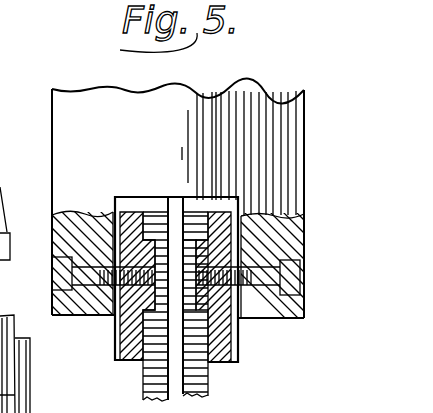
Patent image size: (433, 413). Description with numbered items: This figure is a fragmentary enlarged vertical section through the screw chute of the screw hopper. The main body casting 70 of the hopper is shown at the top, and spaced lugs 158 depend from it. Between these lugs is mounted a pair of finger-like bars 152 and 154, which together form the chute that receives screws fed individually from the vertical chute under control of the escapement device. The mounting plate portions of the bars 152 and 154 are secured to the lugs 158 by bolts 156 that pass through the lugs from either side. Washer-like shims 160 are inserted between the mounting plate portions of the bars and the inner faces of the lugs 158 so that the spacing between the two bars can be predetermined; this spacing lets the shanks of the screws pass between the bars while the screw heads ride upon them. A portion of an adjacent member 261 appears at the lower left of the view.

The main body casting 70 is at (293, 103).
The finger-like bar 152 is at (153, 368).
The finger-like bar 154 is at (190, 376).
The bolt 156 is at (52, 280).
The lug 158 is at (58, 230).
The washer-like shim 160 is at (114, 322).
The member 261 is at (43, 300).